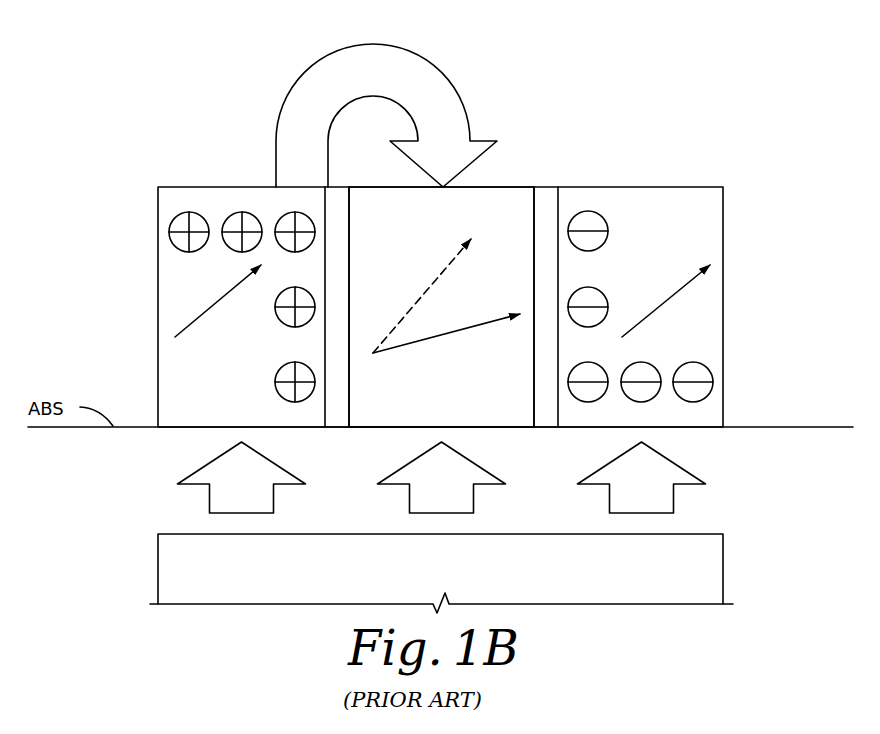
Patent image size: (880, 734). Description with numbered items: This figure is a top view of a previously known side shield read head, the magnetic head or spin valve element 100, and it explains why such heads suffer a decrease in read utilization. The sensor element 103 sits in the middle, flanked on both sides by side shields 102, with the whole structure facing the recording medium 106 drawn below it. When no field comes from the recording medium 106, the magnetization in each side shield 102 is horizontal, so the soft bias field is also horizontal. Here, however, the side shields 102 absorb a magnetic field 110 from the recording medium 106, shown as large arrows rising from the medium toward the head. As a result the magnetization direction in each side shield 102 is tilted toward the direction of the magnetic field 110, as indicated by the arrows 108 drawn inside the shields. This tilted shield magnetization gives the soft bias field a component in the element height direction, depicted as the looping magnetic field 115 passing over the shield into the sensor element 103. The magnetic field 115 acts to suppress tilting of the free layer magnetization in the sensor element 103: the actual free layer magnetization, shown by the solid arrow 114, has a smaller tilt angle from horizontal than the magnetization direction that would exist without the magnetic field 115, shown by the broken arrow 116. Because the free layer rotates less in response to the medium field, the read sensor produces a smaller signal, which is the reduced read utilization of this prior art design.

The magnetic head 100 is at (670, 45).
The side shield 102 is at (200, 186).
The sensor element 103 is at (515, 186).
The recording medium 106 is at (724, 560).
The arrows 108 is at (200, 316).
The magnetic field 110 is at (274, 498).
The arrow 114 is at (435, 340).
The magnetic field 115 is at (290, 88).
The broken arrow 116 is at (413, 307).